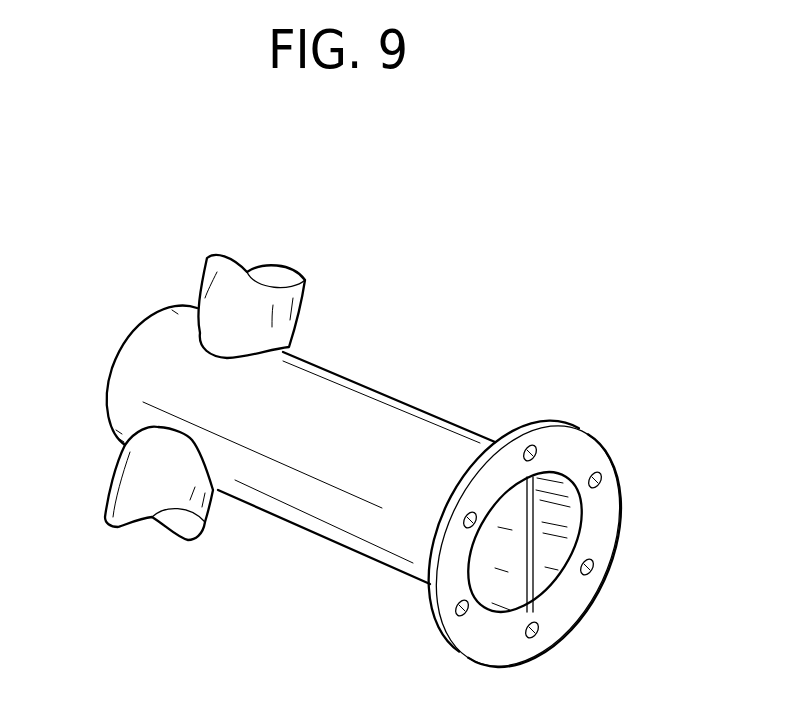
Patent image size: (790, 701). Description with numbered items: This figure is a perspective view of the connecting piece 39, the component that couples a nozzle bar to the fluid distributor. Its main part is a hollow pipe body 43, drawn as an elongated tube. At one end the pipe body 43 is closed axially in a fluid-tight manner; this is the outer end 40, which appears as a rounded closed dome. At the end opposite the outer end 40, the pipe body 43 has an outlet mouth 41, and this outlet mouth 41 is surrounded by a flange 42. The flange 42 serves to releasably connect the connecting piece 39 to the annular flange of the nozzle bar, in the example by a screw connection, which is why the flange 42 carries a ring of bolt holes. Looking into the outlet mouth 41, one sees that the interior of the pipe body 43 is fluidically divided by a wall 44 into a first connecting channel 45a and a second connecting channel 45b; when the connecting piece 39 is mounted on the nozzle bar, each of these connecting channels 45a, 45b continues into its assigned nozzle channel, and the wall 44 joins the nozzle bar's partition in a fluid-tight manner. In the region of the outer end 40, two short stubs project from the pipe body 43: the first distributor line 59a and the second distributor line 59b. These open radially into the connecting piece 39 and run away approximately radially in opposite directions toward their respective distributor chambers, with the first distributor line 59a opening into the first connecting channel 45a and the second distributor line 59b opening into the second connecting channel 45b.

The connecting piece 39 is at (515, 370).
The outer end 40 is at (108, 372).
The outlet mouth 41 is at (587, 517).
The flange 42 is at (597, 430).
The hollow pipe body 43 is at (387, 410).
The wall 44 is at (528, 573).
The first connecting channel 45a is at (552, 533).
The second connecting channel 45b is at (500, 582).
The first distributor line 59a is at (307, 315).
The second distributor line 59b is at (218, 518).